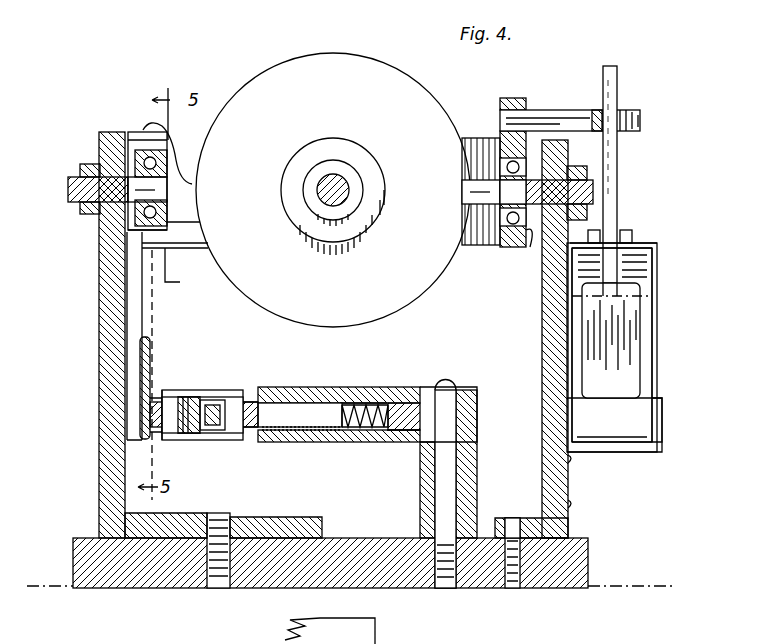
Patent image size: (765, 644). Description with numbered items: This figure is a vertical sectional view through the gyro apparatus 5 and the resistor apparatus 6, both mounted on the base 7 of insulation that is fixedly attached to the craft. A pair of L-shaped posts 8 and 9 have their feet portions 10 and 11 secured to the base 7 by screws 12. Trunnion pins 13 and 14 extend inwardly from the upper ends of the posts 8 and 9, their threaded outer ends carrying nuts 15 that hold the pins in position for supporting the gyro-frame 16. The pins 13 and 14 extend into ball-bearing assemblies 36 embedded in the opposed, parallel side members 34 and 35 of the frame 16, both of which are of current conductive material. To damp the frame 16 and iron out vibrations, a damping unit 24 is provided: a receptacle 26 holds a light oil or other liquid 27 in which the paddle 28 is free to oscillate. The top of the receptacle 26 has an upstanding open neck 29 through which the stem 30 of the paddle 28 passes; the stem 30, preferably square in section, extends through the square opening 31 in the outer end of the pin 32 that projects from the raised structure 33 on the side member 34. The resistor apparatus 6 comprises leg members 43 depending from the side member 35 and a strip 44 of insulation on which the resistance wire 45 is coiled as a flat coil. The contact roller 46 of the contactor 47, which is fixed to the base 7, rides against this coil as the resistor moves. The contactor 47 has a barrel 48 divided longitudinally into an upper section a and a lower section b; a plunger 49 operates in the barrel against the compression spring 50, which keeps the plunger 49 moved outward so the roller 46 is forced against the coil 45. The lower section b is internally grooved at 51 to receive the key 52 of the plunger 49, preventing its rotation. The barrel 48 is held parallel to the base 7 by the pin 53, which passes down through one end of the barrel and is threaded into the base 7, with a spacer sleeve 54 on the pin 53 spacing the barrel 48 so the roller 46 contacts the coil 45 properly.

The gyro apparatus 5 is at (375, 51).
The resistor apparatus 6 is at (188, 381).
The base 7 is at (480, 588).
The L-shaped post 8 is at (105, 360).
The L-shaped post 9 is at (542, 340).
The foot portion 10 is at (262, 517).
The foot portion 11 is at (506, 516).
The screw 12 is at (222, 588).
The trunnion pin 13 is at (500, 192).
The trunnion pin 14 is at (125, 222).
The nut 15 is at (80, 206).
The gyro-frame 16 is at (195, 131).
The damping unit 24 is at (666, 278).
The receptacle 26 is at (657, 364).
The liquid 27 is at (648, 298).
The paddle 28 is at (625, 340).
The open neck 29 is at (632, 234).
The stem 30 is at (617, 191).
The square opening 31 is at (612, 132).
The pin 32 is at (556, 112).
The raised structure 33 is at (512, 98).
The side member 34 is at (504, 247).
The side member 35 is at (170, 262).
The ball-bearing assembly 36 is at (167, 220).
The leg member 43 is at (127, 286).
The strip 44 is at (150, 435).
The resistance wire 45 is at (152, 362).
The contact roller 46 is at (212, 398).
The contactor 47 is at (306, 387).
The barrel 48 is at (392, 388).
The plunger 49 is at (290, 440).
The compression spring 50 is at (390, 442).
The groove 51 is at (362, 442).
The key 52 is at (330, 442).
The pin 53 is at (446, 380).
The spacer sleeve 54 is at (420, 500).
The upper section a is at (352, 388).
The lower section b is at (402, 442).